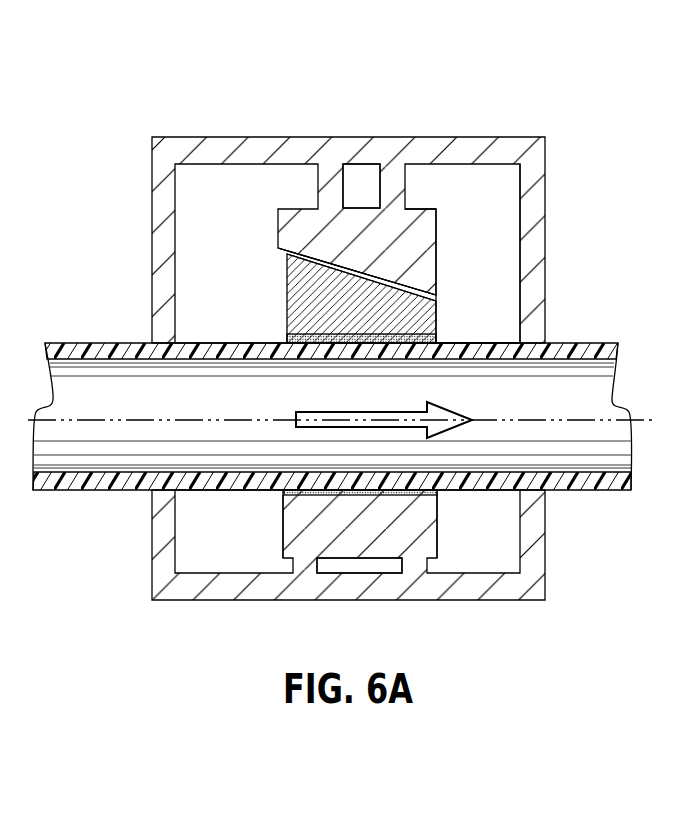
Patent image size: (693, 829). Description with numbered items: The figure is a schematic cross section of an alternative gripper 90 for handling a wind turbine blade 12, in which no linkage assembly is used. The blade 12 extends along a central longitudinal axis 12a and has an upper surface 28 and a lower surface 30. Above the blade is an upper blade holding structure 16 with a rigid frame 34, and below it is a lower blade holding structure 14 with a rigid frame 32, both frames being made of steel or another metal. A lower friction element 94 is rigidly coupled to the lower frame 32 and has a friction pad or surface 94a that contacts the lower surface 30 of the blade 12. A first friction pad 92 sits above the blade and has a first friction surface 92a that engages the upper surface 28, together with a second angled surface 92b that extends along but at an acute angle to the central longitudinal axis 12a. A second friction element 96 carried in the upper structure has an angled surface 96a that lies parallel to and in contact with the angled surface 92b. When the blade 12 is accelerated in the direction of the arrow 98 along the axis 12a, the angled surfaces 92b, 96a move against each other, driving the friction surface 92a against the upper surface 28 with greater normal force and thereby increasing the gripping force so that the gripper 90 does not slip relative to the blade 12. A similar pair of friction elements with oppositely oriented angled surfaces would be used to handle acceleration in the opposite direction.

The gripper 90 is at (518, 121).
The upper blade holding structure 16 is at (432, 137).
The lower blade holding structure 14 is at (488, 602).
The rigid frame 34 is at (350, 150).
The rigid frame 32 is at (427, 590).
The second friction element 96 is at (432, 224).
The angled surface 96a is at (437, 298).
The arrow 98 is at (453, 345).
The first friction pad 92 is at (287, 284).
The first friction surface 92a is at (296, 340).
The second angled surface 92b is at (312, 252).
The lower friction element 94 is at (426, 535).
The friction pad or surface 94a is at (312, 490).
The wind turbine blade 12 is at (581, 489).
The central longitudinal axis 12a is at (658, 420).
The upper surface 28 is at (92, 343).
The lower surface 30 is at (82, 491).